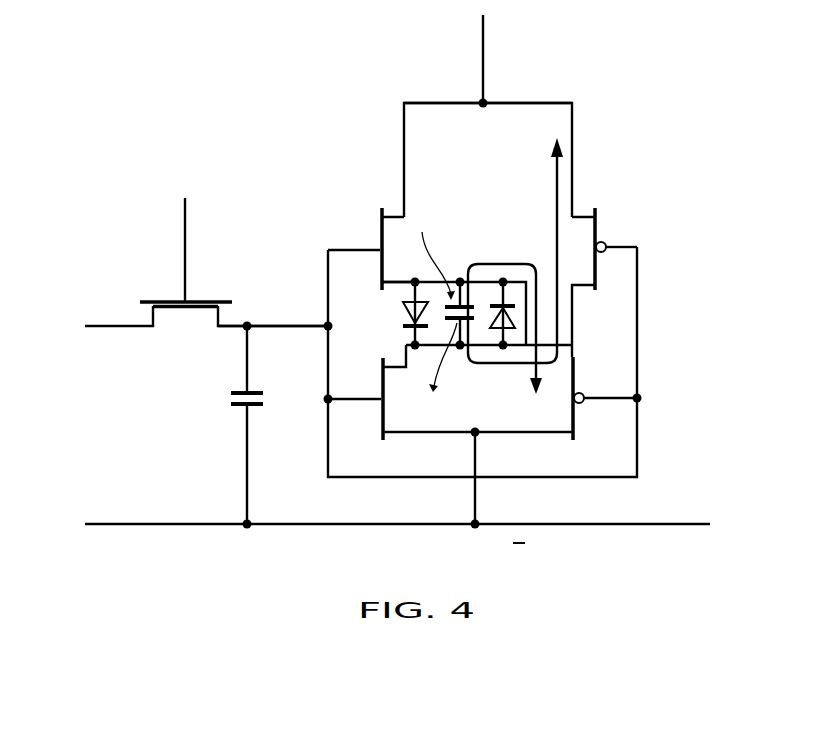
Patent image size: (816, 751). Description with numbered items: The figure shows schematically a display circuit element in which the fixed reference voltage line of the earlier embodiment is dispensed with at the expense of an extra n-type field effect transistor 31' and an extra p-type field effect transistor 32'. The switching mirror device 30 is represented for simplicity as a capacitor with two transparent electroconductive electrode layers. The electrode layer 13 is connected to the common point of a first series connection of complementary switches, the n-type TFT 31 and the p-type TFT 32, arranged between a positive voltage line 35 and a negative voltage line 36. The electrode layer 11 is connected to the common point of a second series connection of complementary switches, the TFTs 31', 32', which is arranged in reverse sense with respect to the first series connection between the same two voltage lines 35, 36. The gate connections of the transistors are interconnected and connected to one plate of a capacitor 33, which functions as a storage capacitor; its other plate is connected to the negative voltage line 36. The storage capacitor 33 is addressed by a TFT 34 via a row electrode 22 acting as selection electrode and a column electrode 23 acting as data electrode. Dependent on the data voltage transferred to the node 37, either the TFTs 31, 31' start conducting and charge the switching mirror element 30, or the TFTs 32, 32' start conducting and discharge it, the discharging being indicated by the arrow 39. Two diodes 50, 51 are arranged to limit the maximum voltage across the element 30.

The transparent electroconductive electrode layer 11 is at (445, 308).
The transparent electroconductive electrode layer 13 is at (471, 321).
The row electrode 22 is at (180, 227).
The column electrode 23 is at (128, 326).
The switching mirror device 30 is at (440, 324).
The n-type field effect transistor 31 is at (380, 395).
The extra n-type field effect transistor 31' is at (350, 233).
The p-type field effect transistor 32 is at (611, 281).
The extra p-type field effect transistor 32' is at (556, 398).
The capacitor 33 is at (250, 408).
The TFT 34 is at (197, 308).
The positive voltage line 35 is at (425, 103).
The negative voltage line 36 is at (675, 523).
The node 37 is at (247, 325).
The arrow 39 is at (515, 264).
The diode 50 is at (497, 316).
The diode 51 is at (407, 310).